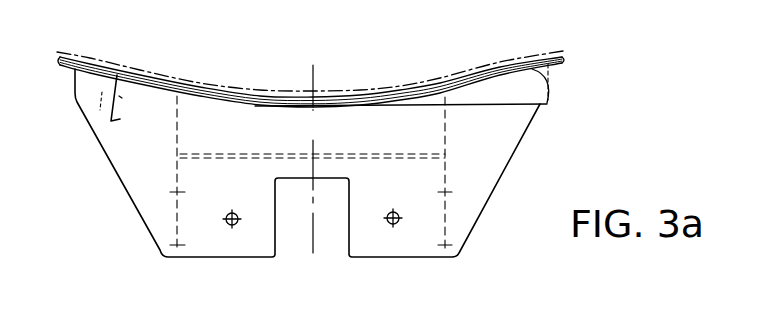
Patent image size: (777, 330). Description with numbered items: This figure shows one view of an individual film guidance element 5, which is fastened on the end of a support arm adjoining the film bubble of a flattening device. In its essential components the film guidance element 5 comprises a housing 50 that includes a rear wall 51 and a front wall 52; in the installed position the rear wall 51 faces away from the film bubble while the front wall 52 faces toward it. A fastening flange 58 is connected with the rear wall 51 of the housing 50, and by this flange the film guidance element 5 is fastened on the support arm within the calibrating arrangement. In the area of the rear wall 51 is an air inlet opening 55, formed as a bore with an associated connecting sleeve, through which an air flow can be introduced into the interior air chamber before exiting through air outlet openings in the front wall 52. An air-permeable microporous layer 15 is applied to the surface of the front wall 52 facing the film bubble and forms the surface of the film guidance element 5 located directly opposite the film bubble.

The film guidance element 5 is at (329, 81).
The microporous air-permeable layer 15 is at (403, 85).
The housing 50 is at (569, 60).
The rear wall 51 is at (549, 93).
The front wall 52 is at (490, 75).
The air inlet opening 55 is at (101, 106).
The fastening flange 58 is at (513, 143).